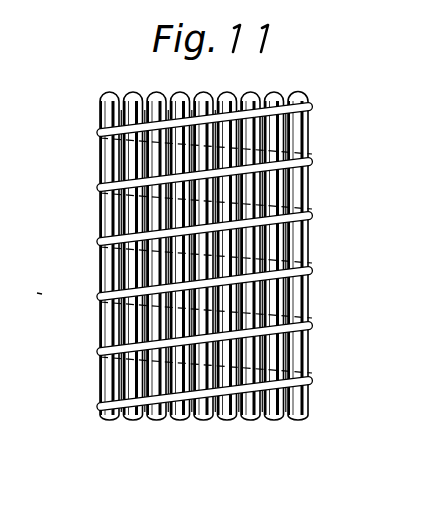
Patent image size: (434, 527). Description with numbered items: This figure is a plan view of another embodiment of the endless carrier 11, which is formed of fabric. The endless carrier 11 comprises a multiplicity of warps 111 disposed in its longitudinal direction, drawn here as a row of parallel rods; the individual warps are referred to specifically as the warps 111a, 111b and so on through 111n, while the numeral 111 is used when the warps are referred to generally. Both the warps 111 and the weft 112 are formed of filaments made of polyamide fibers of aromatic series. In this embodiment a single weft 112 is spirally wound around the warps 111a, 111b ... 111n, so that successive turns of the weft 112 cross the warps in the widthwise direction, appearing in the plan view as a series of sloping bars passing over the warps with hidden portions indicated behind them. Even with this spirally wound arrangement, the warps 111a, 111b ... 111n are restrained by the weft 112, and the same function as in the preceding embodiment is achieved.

The endless carrier 11 is at (86, 160).
The warps 111 is at (323, 463).
The warp 111a is at (113, 416).
The warp 111b is at (150, 414).
The warp 111n is at (296, 414).
The weft 112 is at (315, 212).